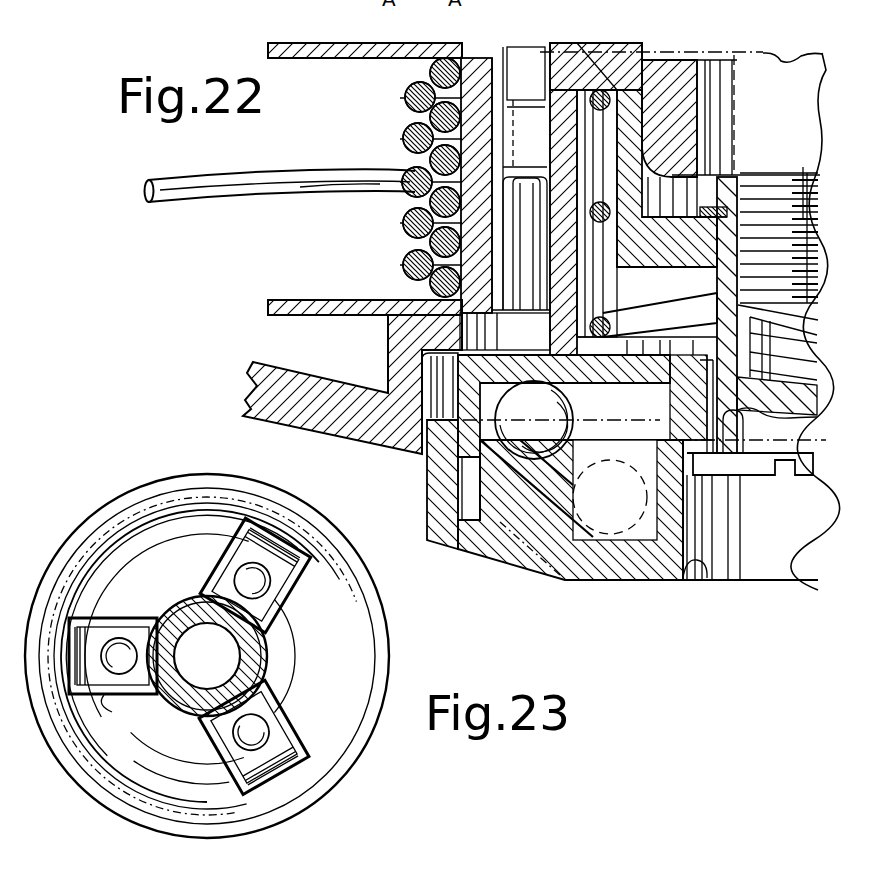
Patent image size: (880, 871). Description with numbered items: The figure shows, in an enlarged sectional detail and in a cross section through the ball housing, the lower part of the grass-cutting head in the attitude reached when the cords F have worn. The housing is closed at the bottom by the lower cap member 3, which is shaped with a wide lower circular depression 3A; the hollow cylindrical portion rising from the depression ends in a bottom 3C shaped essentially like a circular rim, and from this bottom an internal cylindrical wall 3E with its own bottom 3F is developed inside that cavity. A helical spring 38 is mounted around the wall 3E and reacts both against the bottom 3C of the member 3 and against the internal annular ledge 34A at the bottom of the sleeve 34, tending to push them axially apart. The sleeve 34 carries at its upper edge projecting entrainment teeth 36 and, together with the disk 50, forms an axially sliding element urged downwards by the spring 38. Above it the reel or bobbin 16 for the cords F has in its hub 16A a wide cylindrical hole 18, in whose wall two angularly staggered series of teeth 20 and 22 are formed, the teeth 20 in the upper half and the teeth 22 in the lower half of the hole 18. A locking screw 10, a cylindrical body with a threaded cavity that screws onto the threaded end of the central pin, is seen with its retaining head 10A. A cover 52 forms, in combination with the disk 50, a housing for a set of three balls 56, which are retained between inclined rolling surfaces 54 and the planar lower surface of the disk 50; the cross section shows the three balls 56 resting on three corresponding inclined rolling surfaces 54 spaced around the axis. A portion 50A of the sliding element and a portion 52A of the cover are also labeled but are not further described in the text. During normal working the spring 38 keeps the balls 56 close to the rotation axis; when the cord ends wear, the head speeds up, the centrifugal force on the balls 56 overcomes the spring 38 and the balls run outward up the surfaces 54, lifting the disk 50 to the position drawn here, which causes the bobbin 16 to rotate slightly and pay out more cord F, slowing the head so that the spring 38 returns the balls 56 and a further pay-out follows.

In FIG. 22, the lower cap member 3 is at (273, 358).
In FIG. 22, the lower circular depression 3A is at (437, 390).
In FIG. 22, the bottom 3C is at (625, 72).
In FIG. 22, the internal cylindrical wall 3E is at (627, 157).
In FIG. 22, the bottom of internal cylindrical wall 3F is at (678, 245).
In FIG. 22, the locking screw 10 is at (760, 450).
In FIG. 22, the retaining head 10A is at (735, 470).
In FIG. 22, the bobbin 16 is at (328, 303).
In FIG. 22, the hub 16A is at (440, 115).
In FIG. 22, the cylindrical hole 18 is at (505, 52).
In FIG. 22, the teeth 20 is at (647, 33).
In FIG. 22, the teeth 22 is at (505, 331).
In FIG. 22, the sleeve 34 is at (572, 290).
In FIG. 22, the internal annular ledge 34A is at (585, 437).
In FIG. 22, the entrainment teeth 36 is at (487, 93).
In FIG. 22, the helical spring 38 is at (652, 73).
In FIG. 22, the disk 50 is at (585, 386).
In FIG. 22, the bore wall 50A is at (427, 470).
In FIG. 22, the cover 52 is at (610, 570).
In FIG. 23, the cover 52 is at (108, 800).
In FIG. 22, the hub 52A is at (700, 587).
In FIG. 23, the hub 52A is at (247, 640).
In FIG. 22, the inclined rolling surfaces 54 is at (537, 570).
In FIG. 23, the inclined rolling surfaces 54 is at (92, 630).
In FIG. 22, the balls 56 is at (533, 455).
In FIG. 23, the balls 56 is at (117, 697).
In FIG. 22, the cords F is at (307, 182).